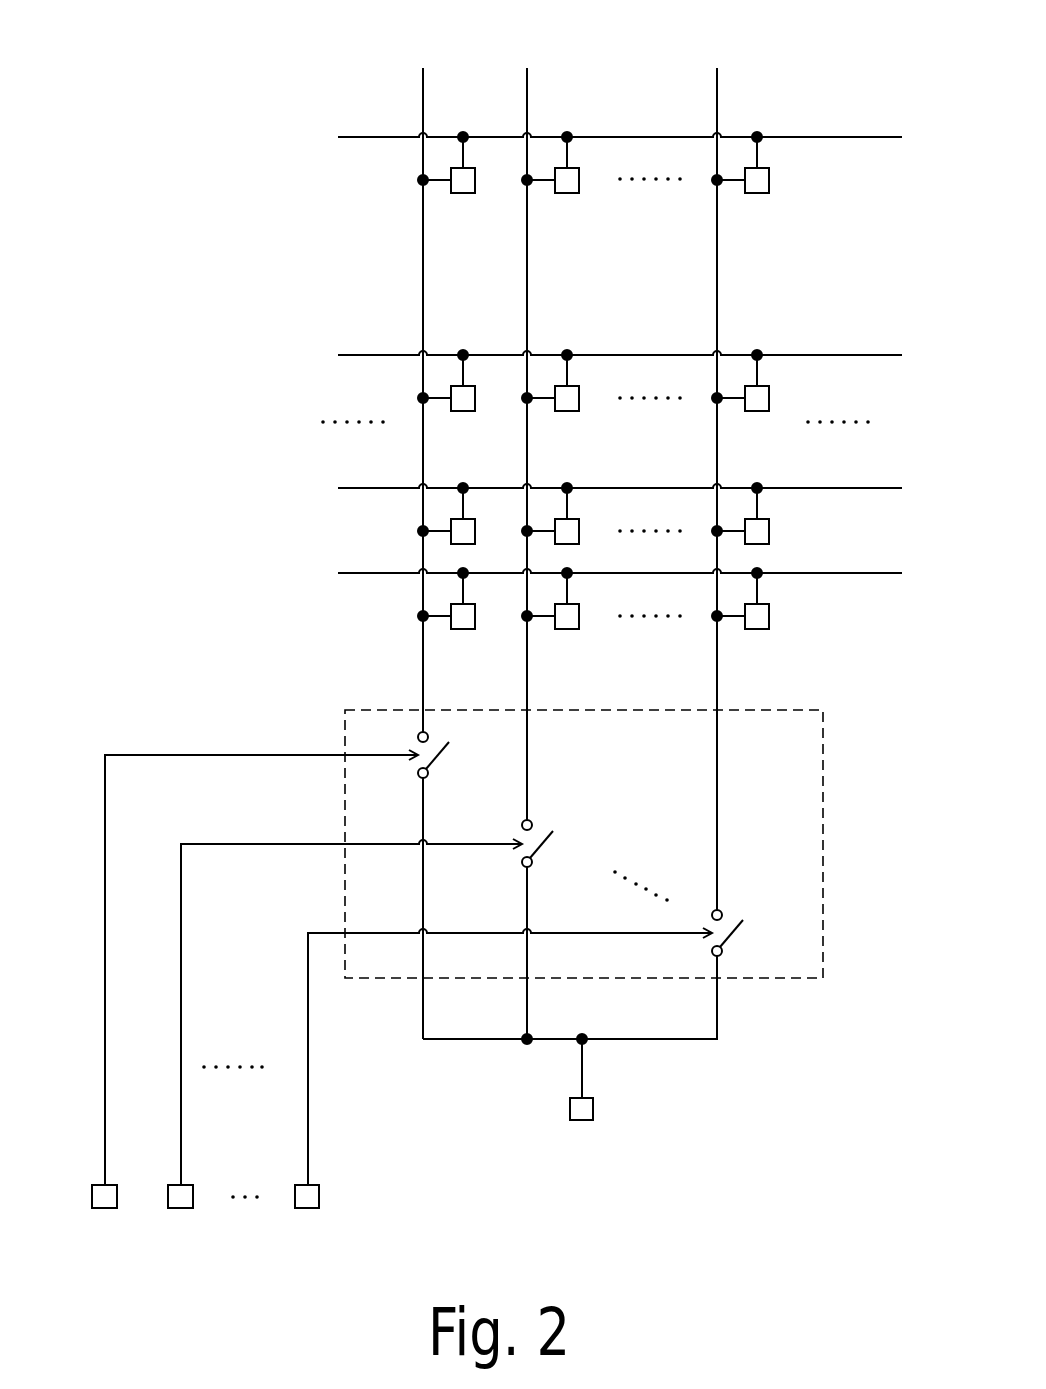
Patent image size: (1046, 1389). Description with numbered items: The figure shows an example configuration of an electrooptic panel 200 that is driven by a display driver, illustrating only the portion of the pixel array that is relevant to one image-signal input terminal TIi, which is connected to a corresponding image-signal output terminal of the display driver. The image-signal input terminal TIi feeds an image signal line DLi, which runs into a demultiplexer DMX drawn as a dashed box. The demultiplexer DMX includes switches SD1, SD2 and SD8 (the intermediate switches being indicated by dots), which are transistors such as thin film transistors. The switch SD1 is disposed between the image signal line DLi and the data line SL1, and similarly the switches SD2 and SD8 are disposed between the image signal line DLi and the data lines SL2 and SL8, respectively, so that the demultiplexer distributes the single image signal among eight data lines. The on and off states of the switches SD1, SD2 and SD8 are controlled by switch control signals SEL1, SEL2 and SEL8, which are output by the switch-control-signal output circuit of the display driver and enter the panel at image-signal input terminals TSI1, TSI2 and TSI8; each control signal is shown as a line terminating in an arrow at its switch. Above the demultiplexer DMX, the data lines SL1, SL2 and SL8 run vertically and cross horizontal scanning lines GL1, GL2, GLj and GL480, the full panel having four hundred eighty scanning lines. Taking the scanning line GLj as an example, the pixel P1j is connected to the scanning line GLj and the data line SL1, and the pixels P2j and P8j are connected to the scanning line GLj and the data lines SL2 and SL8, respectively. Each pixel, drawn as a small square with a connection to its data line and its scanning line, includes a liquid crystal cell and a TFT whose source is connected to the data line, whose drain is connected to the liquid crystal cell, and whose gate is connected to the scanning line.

The electrooptic panel 200 is at (858, 58).
The scanning line GL480 is at (592, 137).
The scanning line GLj is at (603, 355).
The scanning line GL2 is at (602, 488).
The scanning line GL1 is at (602, 573).
The data line SL1 is at (410, 553).
The data line SL2 is at (514, 553).
The data line SL8 is at (704, 553).
The pixel P1j is at (446, 393).
The pixel P2j is at (550, 393).
The pixel P8j is at (741, 393).
The demultiplexer DMX is at (823, 845).
The switch SD1 is at (450, 755).
The switch SD2 is at (554, 843).
The switch SD8 is at (745, 933).
The switch control signal SEL1 is at (248, 967).
The switch control signal SEL2 is at (338, 1012).
The switch control signal SEL8 is at (496, 1056).
The image-signal input terminal TSI1 is at (104, 1210).
The image-signal input terminal TSI2 is at (180, 1210).
The image-signal input terminal TSI8 is at (306, 1210).
The image signal line DLi is at (568, 1068).
The image-signal input terminal TIi is at (581, 1121).